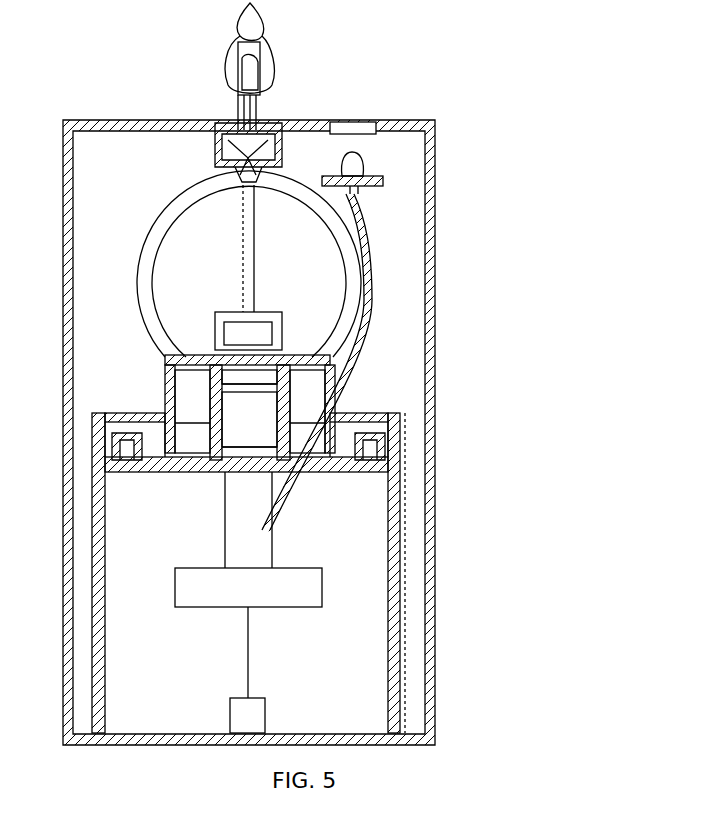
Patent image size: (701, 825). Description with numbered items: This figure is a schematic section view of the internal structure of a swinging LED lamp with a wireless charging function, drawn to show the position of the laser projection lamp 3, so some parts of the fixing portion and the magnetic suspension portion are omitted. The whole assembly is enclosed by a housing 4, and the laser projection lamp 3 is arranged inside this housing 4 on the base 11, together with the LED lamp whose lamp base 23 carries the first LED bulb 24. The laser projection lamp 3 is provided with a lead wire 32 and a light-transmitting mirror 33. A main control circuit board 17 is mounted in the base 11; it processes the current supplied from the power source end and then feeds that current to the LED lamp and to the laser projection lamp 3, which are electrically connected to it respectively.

The laser projection lamp 3 is at (358, 168).
The housing 4 is at (426, 282).
The base 11 is at (400, 460).
The main control circuit board 17 is at (292, 590).
The lamp base 23 is at (283, 132).
The first LED bulb 24 is at (275, 60).
The lead wire 32 is at (373, 238).
The light-transmitting mirror 33 is at (356, 128).